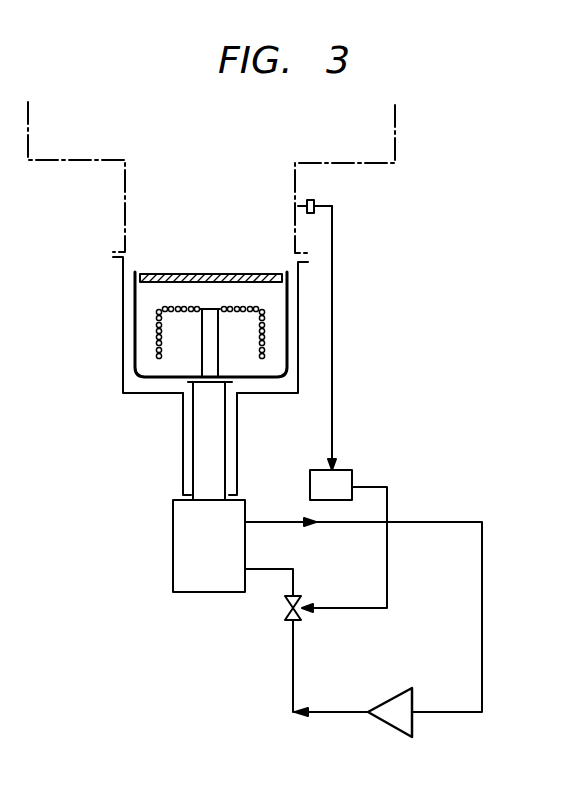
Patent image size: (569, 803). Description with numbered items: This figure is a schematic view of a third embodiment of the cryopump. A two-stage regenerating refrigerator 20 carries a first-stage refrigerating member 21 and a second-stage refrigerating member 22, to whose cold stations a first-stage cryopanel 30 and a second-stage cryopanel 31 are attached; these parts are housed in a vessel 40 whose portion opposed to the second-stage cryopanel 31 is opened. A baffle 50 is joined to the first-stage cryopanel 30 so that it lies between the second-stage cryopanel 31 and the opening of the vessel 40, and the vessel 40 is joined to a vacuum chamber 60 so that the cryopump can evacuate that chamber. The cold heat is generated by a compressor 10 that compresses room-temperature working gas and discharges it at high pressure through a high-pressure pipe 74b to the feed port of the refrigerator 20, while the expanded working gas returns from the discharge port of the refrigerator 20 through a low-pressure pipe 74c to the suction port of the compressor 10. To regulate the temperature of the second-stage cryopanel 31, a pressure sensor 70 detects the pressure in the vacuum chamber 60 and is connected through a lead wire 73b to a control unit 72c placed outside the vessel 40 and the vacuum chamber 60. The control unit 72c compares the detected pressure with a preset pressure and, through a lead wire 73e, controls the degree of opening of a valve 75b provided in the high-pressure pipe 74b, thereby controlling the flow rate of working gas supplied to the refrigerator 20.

The vacuum chamber 60 is at (396, 148).
The pressure sensor 70 is at (312, 199).
The vessel 40 is at (123, 298).
The first-stage cryopanel 30 is at (135, 354).
The baffle 50 is at (158, 272).
The second-stage cryopanel 31 is at (155, 332).
The second-stage refrigerating member 22 is at (202, 338).
The first-stage refrigerating member 21 is at (183, 428).
The refrigerator 20 is at (159, 502).
The lead wire 73b is at (334, 330).
The control unit 72c is at (344, 469).
The lead wire 73e is at (388, 500).
The valve 75b is at (285, 606).
The high-pressure pipe 74b is at (293, 662).
The low-pressure pipe 74c is at (483, 610).
The compressor 10 is at (412, 725).